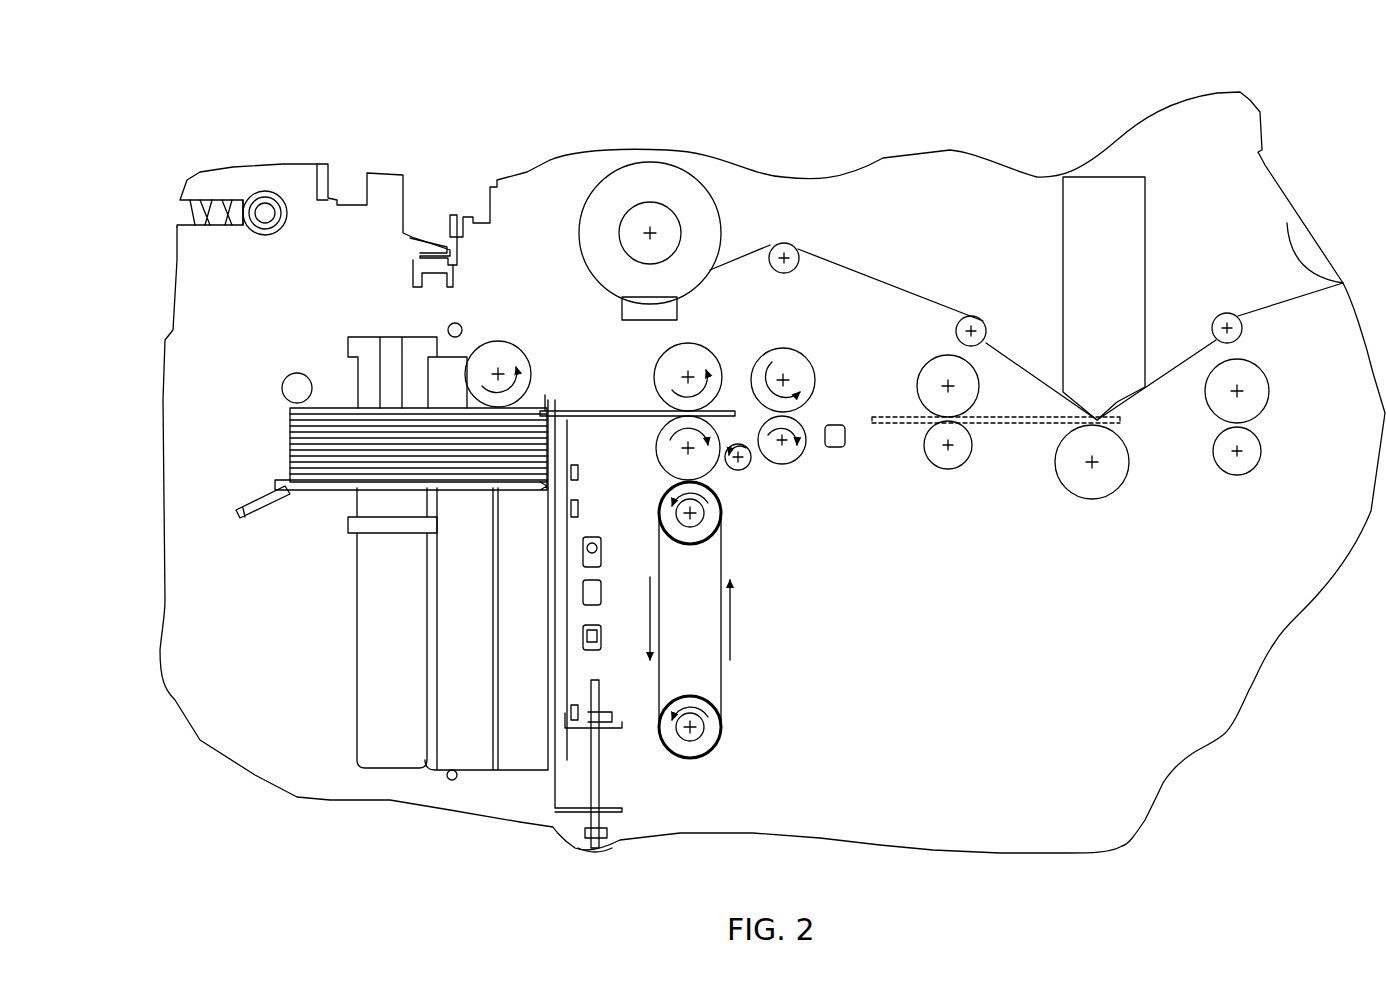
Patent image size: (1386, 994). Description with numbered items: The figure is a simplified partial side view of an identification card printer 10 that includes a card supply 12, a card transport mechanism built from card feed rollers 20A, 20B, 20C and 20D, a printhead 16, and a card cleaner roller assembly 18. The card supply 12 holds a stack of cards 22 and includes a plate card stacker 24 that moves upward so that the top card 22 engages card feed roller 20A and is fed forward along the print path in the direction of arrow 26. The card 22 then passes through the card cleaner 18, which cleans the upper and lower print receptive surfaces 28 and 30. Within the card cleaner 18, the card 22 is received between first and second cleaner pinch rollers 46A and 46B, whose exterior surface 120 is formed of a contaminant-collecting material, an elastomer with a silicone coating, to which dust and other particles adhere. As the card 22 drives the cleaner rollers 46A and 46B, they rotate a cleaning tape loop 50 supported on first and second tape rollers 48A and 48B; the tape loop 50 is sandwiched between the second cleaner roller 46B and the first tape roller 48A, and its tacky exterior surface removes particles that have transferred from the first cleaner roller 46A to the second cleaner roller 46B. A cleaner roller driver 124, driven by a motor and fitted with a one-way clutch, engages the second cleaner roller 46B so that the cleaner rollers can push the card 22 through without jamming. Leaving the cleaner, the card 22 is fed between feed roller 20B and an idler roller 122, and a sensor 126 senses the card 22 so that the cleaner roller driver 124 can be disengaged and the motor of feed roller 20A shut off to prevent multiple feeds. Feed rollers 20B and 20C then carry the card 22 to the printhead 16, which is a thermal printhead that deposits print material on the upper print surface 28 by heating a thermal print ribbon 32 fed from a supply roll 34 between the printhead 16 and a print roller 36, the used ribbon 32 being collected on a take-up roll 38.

The identification card printer 10 is at (223, 97).
The card supply 12 is at (280, 360).
The printhead 16 is at (1097, 187).
The card cleaner roller assembly 18 is at (768, 566).
The card feed roller 20A is at (497, 347).
The card feed roller 20B is at (790, 357).
The card feed roller 20C is at (917, 381).
The card feed roller 20D is at (1255, 380).
The card 22 is at (290, 413).
The plate card stacker 24 is at (318, 492).
The arrow 26 is at (583, 406).
The upper print receptive surface 28 is at (647, 403).
The lower print receptive surface 30 is at (598, 418).
The thermal print ribbon 32 is at (850, 267).
The supply roll 34 is at (660, 173).
The print roller 36 is at (1100, 493).
The take-up roll 38 is at (1300, 250).
The first cleaner pinch roller 46A is at (693, 347).
The second cleaner pinch roller 46B is at (662, 457).
The first tape roller 48A is at (712, 517).
The second tape roller 48B is at (707, 742).
The cleaning tape loop 50 is at (722, 683).
The exterior surface 120 is at (718, 358).
The idler roller 122 is at (797, 462).
The cleaner roller driver 124 is at (745, 467).
The sensor 126 is at (845, 437).